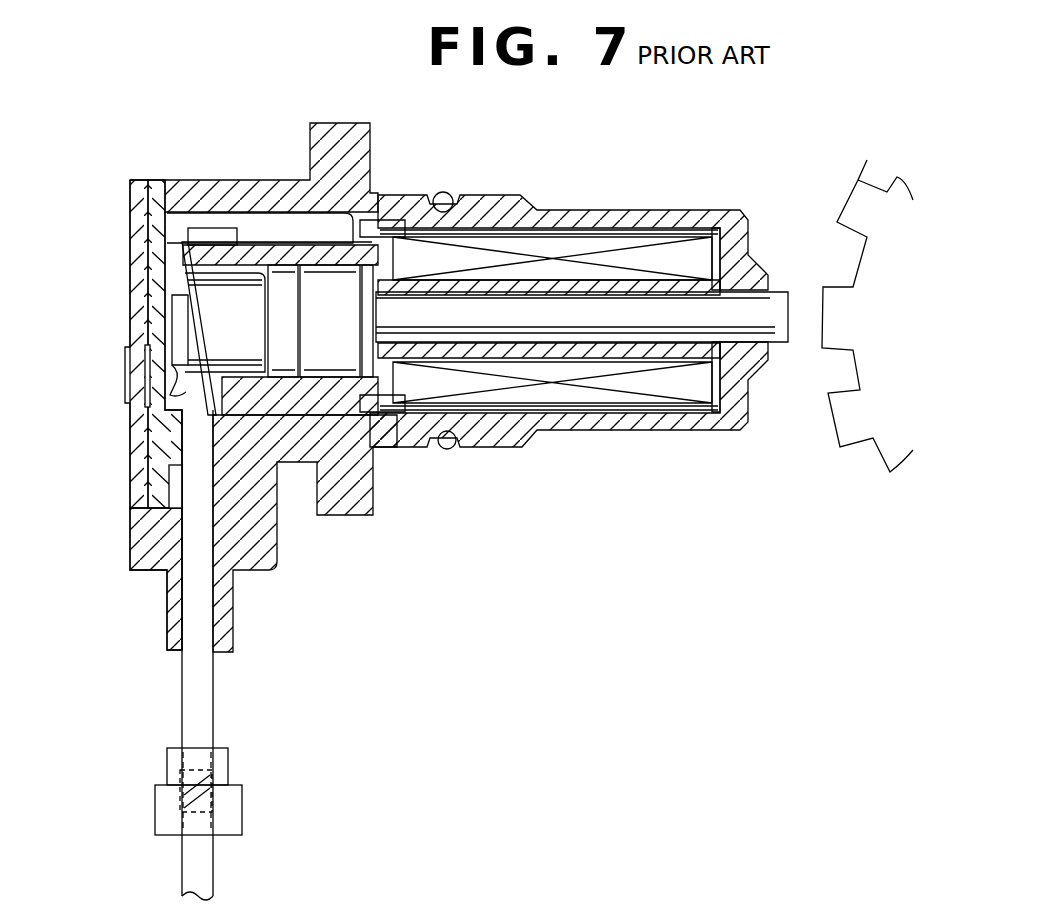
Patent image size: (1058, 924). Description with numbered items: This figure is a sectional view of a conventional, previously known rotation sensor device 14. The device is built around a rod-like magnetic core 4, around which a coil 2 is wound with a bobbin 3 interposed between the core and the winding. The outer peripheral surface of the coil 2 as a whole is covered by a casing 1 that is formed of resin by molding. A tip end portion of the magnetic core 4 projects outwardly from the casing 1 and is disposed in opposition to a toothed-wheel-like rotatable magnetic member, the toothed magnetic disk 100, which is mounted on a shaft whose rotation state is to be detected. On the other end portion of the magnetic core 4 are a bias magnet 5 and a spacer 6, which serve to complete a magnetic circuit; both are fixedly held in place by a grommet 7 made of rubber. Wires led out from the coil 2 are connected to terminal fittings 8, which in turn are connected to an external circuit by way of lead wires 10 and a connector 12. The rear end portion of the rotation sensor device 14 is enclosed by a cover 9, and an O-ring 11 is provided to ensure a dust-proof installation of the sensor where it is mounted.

The casing 1 is at (580, 214).
The coil 2 is at (572, 392).
The bobbin 3 is at (717, 228).
The magnetic core 4 is at (775, 305).
The bias magnet 5 is at (367, 380).
The spacer 6 is at (306, 388).
The grommet 7 is at (173, 288).
The terminal fittings 8 is at (168, 407).
The cover 9 is at (150, 517).
The lead wires 10 is at (200, 682).
The O-ring 11 is at (451, 449).
The connector 12 is at (228, 767).
The rotation sensor device 14 is at (605, 515).
The toothed magnetic disk 100 is at (857, 180).